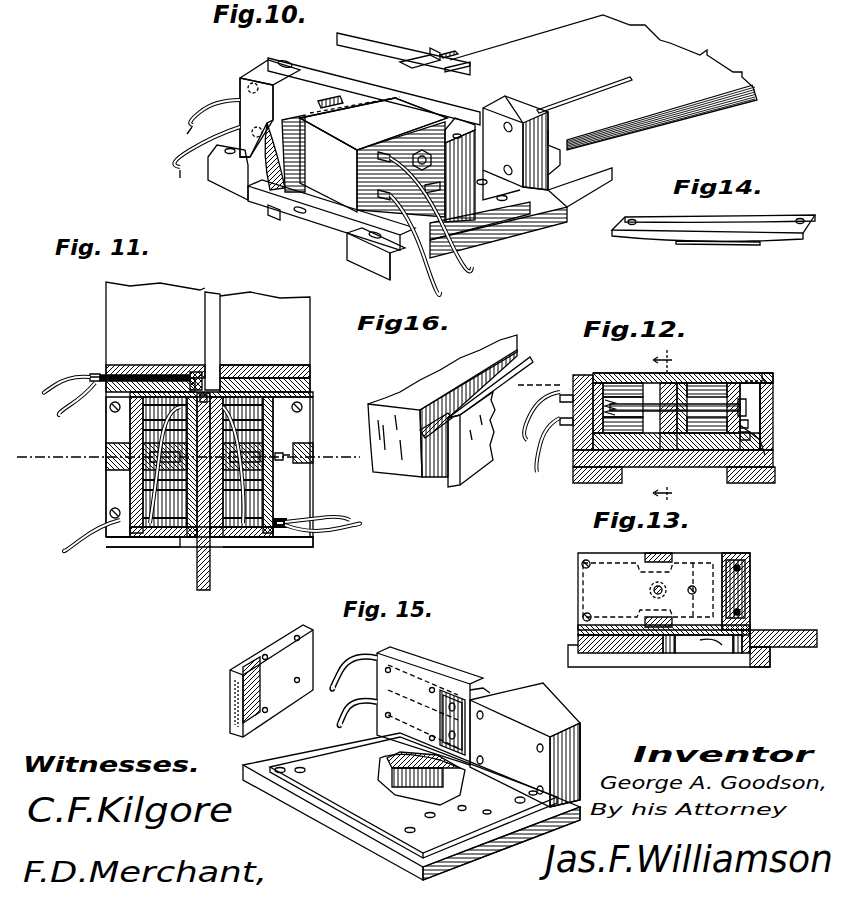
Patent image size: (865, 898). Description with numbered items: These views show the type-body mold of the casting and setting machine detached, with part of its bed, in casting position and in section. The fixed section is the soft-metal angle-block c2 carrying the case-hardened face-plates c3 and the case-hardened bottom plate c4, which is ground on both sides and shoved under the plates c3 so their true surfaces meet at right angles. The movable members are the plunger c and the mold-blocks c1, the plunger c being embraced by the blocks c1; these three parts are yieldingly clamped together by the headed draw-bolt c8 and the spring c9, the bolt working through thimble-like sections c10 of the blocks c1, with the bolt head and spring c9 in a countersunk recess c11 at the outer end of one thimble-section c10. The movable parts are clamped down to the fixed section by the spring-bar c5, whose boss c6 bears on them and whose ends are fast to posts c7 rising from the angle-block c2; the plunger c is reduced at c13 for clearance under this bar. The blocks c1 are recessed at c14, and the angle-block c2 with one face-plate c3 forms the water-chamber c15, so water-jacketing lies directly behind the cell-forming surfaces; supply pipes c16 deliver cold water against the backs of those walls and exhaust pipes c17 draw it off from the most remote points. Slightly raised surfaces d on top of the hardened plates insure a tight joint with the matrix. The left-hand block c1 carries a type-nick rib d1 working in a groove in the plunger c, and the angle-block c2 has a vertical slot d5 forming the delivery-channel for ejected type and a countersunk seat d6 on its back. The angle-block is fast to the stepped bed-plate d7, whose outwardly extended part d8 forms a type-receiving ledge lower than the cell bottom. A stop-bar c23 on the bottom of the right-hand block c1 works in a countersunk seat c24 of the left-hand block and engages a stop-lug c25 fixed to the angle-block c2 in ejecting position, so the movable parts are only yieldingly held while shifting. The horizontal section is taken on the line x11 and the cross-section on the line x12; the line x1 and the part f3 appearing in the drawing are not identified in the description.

In FIG. 10, the plunger c is at (275, 200).
In FIG. 11, the plunger c is at (197, 575).
In FIG. 16, the plunger c is at (485, 428).
In FIG. 10, the movable mold-blocks c1 is at (250, 147).
In FIG. 11, the movable mold-blocks c1 is at (158, 540).
In FIG. 16, the movable mold-blocks c1 is at (417, 380).
In FIG. 12, the movable mold-blocks c1 is at (603, 375).
In FIG. 13, the movable mold-blocks c1 is at (578, 583).
In FIG. 10, the angle-block c2 is at (490, 98).
In FIG. 11, the angle-block c2 is at (136, 364).
In FIG. 13, the angle-block c2 is at (750, 562).
In FIG. 15, the angle-block c2 is at (430, 672).
In FIG. 10, the hardened face-plates c3 is at (377, 53).
In FIG. 11, the hardened face-plates c3 is at (110, 385).
In FIG. 13, the hardened face-plates c3 is at (727, 555).
In FIG. 15, the hardened face-plates c3 is at (280, 640).
In FIG. 10, the hardened bottom plate c4 is at (343, 207).
In FIG. 11, the hardened bottom plate c4 is at (272, 485).
In FIG. 12, the hardened bottom plate c4 is at (700, 468).
In FIG. 13, the hardened bottom plate c4 is at (578, 633).
In FIG. 15, the hardened bottom plate c4 is at (342, 800).
In FIG. 10, the spring-bar c5 is at (403, 115).
In FIG. 14, the spring-bar c5 is at (747, 227).
In FIG. 12, the spring-bar c5 is at (760, 374).
In FIG. 13, the spring-bar c5 is at (660, 555).
In FIG. 14, the boss c6 is at (725, 249).
In FIG. 12, the boss c6 is at (683, 384).
In FIG. 10, the posts c7 is at (265, 72).
In FIG. 11, the posts c7 is at (106, 472).
In FIG. 12, the posts c7 is at (775, 400).
In FIG. 10, the draw-bolt c8 is at (427, 150).
In FIG. 11, the draw-bolt c8 is at (285, 450).
In FIG. 12, the draw-bolt c8 is at (750, 424).
In FIG. 13, the draw-bolt c8 is at (649, 590).
In FIG. 12, the spring c9 is at (623, 407).
In FIG. 11, the thimble-like sections c10 is at (150, 445).
In FIG. 12, the thimble-like sections c10 is at (725, 374).
In FIG. 12, the countersunk recess c11 is at (620, 383).
In FIG. 10, the reduced portion c13 is at (327, 99).
In FIG. 10, the water-jacketing chambers c14 is at (215, 100).
In FIG. 11, the water-jacketing chambers c14 is at (150, 490).
In FIG. 12, the water-jacketing chambers c14 is at (633, 384).
In FIG. 11, the water-chamber c15 is at (190, 372).
In FIG. 13, the water-chamber c15 is at (745, 590).
In FIG. 15, the water-chamber c15 is at (455, 695).
In FIG. 10, the supply circulating-pipes c16 is at (482, 281).
In FIG. 11, the supply circulating-pipes c16 is at (68, 378).
In FIG. 16, the supply circulating-pipes c16 is at (530, 426).
In FIG. 12, the supply circulating-pipes c16 is at (566, 398).
In FIG. 13, the supply circulating-pipes c16 is at (742, 571).
In FIG. 15, the supply circulating-pipes c16 is at (333, 665).
In FIG. 10, the exhaust circulating-pipes c17 is at (438, 296).
In FIG. 11, the exhaust circulating-pipes c17 is at (62, 414).
In FIG. 16, the exhaust circulating-pipes c17 is at (537, 478).
In FIG. 12, the exhaust circulating-pipes c17 is at (566, 421).
In FIG. 13, the exhaust circulating-pipes c17 is at (745, 611).
In FIG. 15, the exhaust circulating-pipes c17 is at (335, 718).
In FIG. 12, the stop-bar c23 is at (683, 470).
In FIG. 13, the stop-bar c23 is at (650, 618).
In FIG. 12, the countersunk seat c24 is at (740, 470).
In FIG. 10, the stop-lug c25 is at (435, 200).
In FIG. 12, the stop-lug c25 is at (752, 440).
In FIG. 15, the stop-lug c25 is at (457, 809).
In FIG. 10, the raised surfaces d is at (410, 70).
In FIG. 16, the type-nick rib d1 is at (432, 438).
In FIG. 10, the vertical slot d5 is at (450, 73).
In FIG. 15, the vertical slot d5 is at (480, 690).
In FIG. 10, the countersunk seat d6 is at (551, 153).
In FIG. 11, the countersunk seat d6 is at (268, 365).
In FIG. 15, the countersunk seat d6 is at (580, 760).
In FIG. 10, the bed-plate d7 is at (553, 223).
In FIG. 11, the bed-plate d7 is at (293, 540).
In FIG. 12, the bed-plate d7 is at (590, 483).
In FIG. 13, the bed-plate d7 is at (650, 667).
In FIG. 10, the type-receiving ledge d8 is at (647, 130).
In FIG. 11, the type-receiving ledge d8 is at (125, 307).
In FIG. 13, the type-receiving ledge d8 is at (787, 648).
In FIG. 11, the strip f3 is at (212, 323).
In FIG. 12, the section line x1 is at (661, 425).
In FIG. 16, the section line x11 is at (539, 377).
In FIG. 12, the section line x11 is at (775, 377).
In FIG. 11, the section line x12 is at (188, 448).